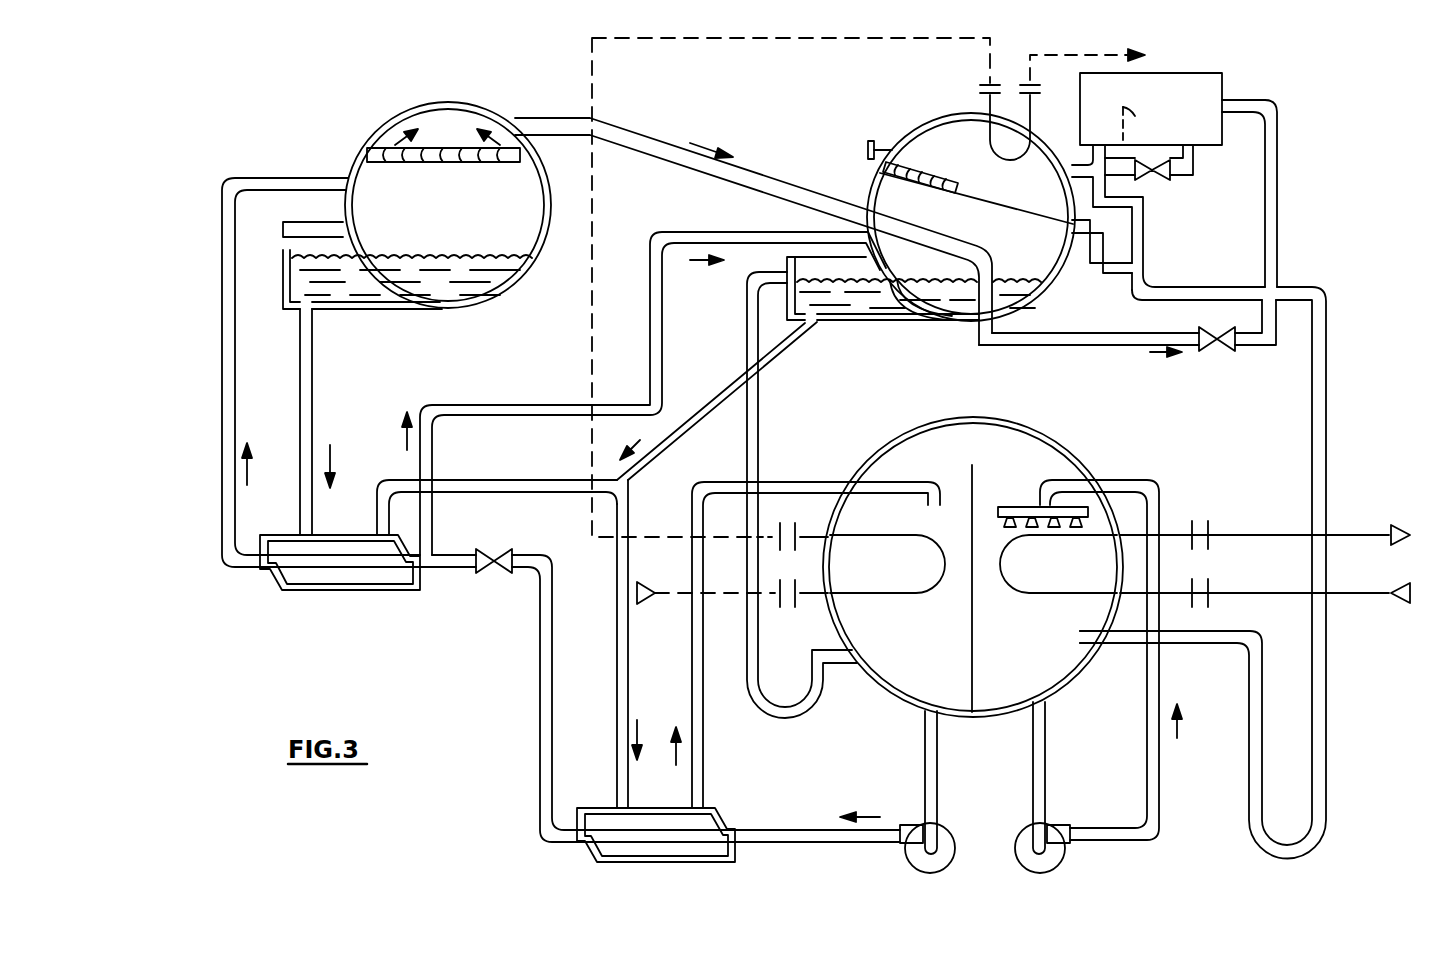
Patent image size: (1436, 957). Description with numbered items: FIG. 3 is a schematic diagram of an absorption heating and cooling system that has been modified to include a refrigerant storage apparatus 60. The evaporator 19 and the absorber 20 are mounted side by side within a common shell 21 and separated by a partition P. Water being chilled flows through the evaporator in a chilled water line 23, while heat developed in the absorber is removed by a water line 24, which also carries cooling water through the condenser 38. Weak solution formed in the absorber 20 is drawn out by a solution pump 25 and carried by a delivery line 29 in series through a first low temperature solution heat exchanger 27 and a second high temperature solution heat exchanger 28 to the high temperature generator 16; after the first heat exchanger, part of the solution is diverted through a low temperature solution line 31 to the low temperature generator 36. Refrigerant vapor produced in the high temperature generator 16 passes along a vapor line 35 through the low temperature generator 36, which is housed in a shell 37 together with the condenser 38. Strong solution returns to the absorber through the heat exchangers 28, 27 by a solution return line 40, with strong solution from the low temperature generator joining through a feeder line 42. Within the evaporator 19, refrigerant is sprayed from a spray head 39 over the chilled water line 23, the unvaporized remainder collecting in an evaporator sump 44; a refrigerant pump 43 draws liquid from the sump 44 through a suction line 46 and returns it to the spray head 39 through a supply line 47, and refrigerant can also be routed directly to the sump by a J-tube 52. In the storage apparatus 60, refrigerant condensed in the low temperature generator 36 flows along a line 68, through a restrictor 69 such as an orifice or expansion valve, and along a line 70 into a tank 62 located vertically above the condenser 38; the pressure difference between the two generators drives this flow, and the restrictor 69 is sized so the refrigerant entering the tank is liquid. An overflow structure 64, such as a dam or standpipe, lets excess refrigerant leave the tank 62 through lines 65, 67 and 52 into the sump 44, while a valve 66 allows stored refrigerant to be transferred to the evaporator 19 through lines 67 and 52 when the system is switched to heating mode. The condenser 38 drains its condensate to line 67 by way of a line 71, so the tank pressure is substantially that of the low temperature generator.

The high temperature generator 16 is at (449, 311).
The evaporator 19 is at (1090, 459).
The absorber 20 is at (915, 690).
The common shell 21 is at (1098, 670).
The chilled water line 23 is at (1172, 525).
The water line 24 is at (590, 73).
The solution pump 25 is at (908, 864).
The first low temperature solution heat exchanger 27 is at (655, 866).
The second high temperature solution heat exchanger 28 is at (360, 595).
The delivery line 29 is at (222, 290).
The low temperature solution line 31 is at (432, 528).
The vapor line 35 is at (765, 185).
The low temperature generator 36 is at (910, 279).
The shell 37 is at (1030, 322).
The condenser 38 is at (940, 135).
The spray head 39 is at (1000, 505).
The solution return line 40 is at (312, 390).
The feeder line 42 is at (787, 348).
The refrigerant pump 43 is at (1062, 866).
The evaporator sump 44 is at (1038, 692).
The suction line 46 is at (1047, 783).
The supply line 47 is at (1160, 782).
The J-tube 52 is at (1327, 368).
The refrigerant storage apparatus 60 is at (1230, 77).
The tank 62 is at (1185, 72).
The overflow structure 64 is at (1135, 116).
The line 65 is at (1072, 175).
The valve 66 is at (1160, 180).
The line 67 is at (1145, 240).
The line 68 is at (1078, 348).
The restrictor 69 is at (1215, 352).
The line 70 is at (1278, 258).
The line 71 is at (1112, 275).
The partition P is at (970, 472).